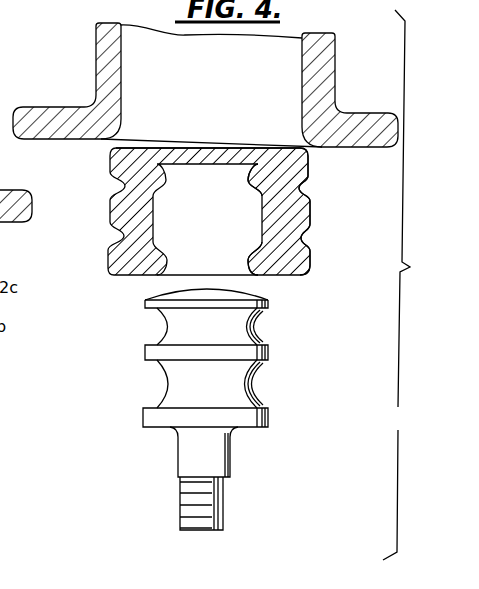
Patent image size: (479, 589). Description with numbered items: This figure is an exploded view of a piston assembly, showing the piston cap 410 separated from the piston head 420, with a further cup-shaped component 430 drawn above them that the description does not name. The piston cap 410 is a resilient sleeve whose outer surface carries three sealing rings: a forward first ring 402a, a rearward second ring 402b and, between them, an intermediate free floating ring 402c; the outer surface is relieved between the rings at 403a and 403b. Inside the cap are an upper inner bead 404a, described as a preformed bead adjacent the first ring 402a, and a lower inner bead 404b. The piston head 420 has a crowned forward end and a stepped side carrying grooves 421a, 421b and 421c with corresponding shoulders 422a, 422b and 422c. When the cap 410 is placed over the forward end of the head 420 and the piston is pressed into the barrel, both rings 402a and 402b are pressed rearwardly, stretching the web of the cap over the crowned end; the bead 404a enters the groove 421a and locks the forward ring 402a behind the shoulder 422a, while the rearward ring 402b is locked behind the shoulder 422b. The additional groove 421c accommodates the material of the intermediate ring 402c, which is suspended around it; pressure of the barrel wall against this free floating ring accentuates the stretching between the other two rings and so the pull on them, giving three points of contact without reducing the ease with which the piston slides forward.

The cap 430 is at (302, 89).
The piston cap 410 is at (224, 231).
The first ring 402a is at (310, 156).
The second ring 402b is at (311, 260).
The intermediate free floating ring 402c is at (312, 218).
The upper outer groove 403a is at (304, 193).
The lower outer groove 403b is at (312, 241).
The preformed inner bead 404a is at (242, 193).
The lower inner rib 404b is at (248, 277).
The piston head 420 is at (218, 398).
The shoulder 422a is at (270, 309).
The shoulder 422b is at (270, 425).
The central flange of plunger 422c is at (270, 358).
The groove 421a is at (250, 328).
The groove 421b is at (232, 443).
The groove 421c is at (246, 390).